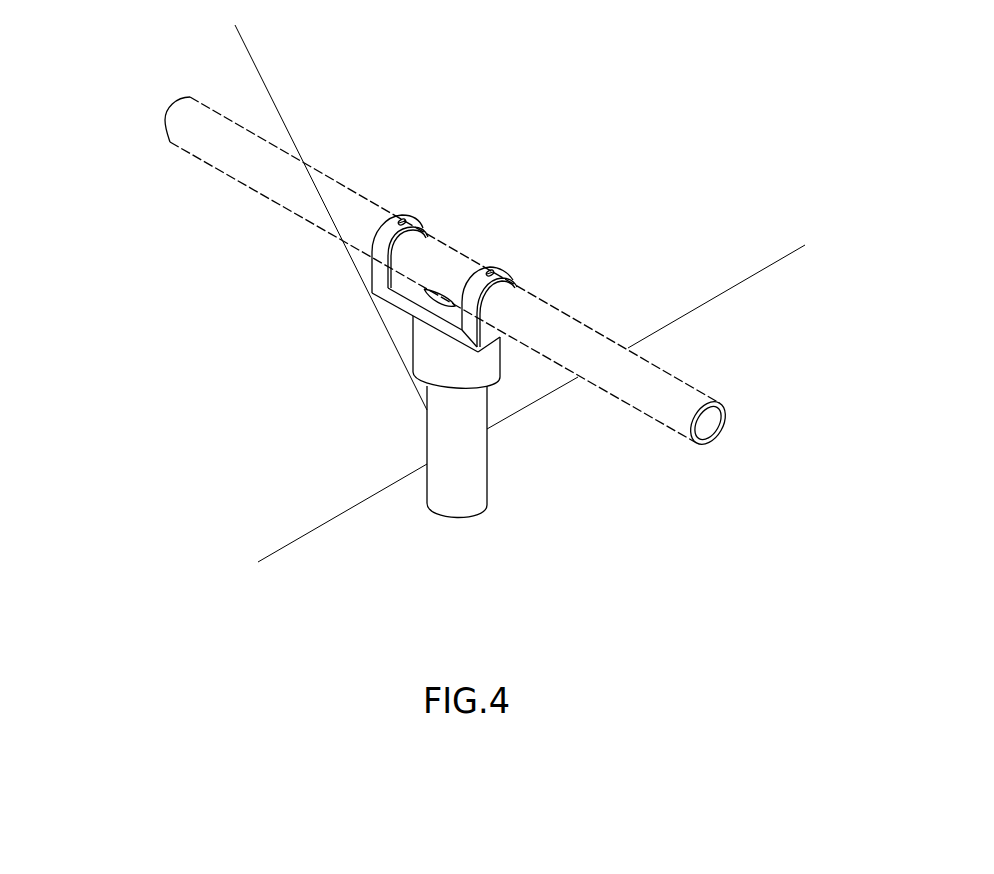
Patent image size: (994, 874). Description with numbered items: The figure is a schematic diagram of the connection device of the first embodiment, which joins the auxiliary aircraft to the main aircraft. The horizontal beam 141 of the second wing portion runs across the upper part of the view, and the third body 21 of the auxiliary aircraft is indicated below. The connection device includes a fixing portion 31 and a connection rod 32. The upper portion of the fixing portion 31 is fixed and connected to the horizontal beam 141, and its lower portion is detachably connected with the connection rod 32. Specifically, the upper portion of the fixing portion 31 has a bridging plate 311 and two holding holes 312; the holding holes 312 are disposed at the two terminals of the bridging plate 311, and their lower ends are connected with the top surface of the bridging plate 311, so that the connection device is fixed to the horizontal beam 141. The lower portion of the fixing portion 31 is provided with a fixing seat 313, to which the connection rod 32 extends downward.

The horizontal beam 141 is at (205, 163).
The third body 21 is at (328, 561).
The fixing portion 31 is at (445, 330).
The bridging plate 311 is at (383, 295).
The holding holes 312 is at (425, 227).
The fixing seat 313 is at (413, 377).
The connection rod 32 is at (483, 455).